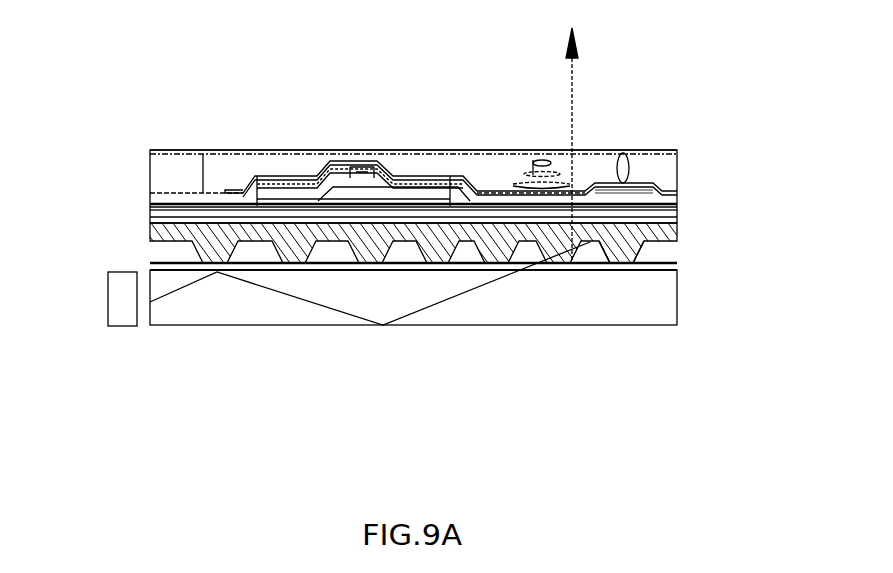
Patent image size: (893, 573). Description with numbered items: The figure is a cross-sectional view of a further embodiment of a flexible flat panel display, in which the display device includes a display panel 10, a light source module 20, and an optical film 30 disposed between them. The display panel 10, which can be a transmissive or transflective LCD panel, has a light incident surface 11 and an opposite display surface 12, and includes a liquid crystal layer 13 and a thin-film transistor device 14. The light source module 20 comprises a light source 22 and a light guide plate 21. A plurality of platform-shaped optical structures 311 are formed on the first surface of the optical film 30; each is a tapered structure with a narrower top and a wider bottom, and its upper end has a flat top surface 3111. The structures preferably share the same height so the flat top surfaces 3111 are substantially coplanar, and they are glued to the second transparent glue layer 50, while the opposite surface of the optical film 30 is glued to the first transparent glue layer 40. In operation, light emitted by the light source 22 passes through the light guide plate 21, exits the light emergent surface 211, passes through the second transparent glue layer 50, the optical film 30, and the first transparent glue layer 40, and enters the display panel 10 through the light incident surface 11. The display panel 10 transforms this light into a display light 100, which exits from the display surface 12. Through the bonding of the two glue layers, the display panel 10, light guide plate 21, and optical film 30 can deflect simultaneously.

The display light 100 is at (571, 132).
The display panel 10 is at (150, 149).
The display surface 12 is at (250, 150).
The thin-film transistor device 14 is at (362, 172).
The liquid crystal layer 13 is at (532, 160).
The first transparent glue layer 40 is at (150, 218).
The light incident surface 11 is at (172, 223).
The optical film 30 is at (677, 232).
The platform-shaped optical structure 311 is at (623, 250).
The flat top surface 3111 is at (612, 265).
The second transparent glue layer 50 is at (678, 268).
The light guide plate 21 is at (225, 313).
The light emergent surface 211 is at (577, 271).
The light source 22 is at (107, 300).
The light source module 20 is at (193, 420).